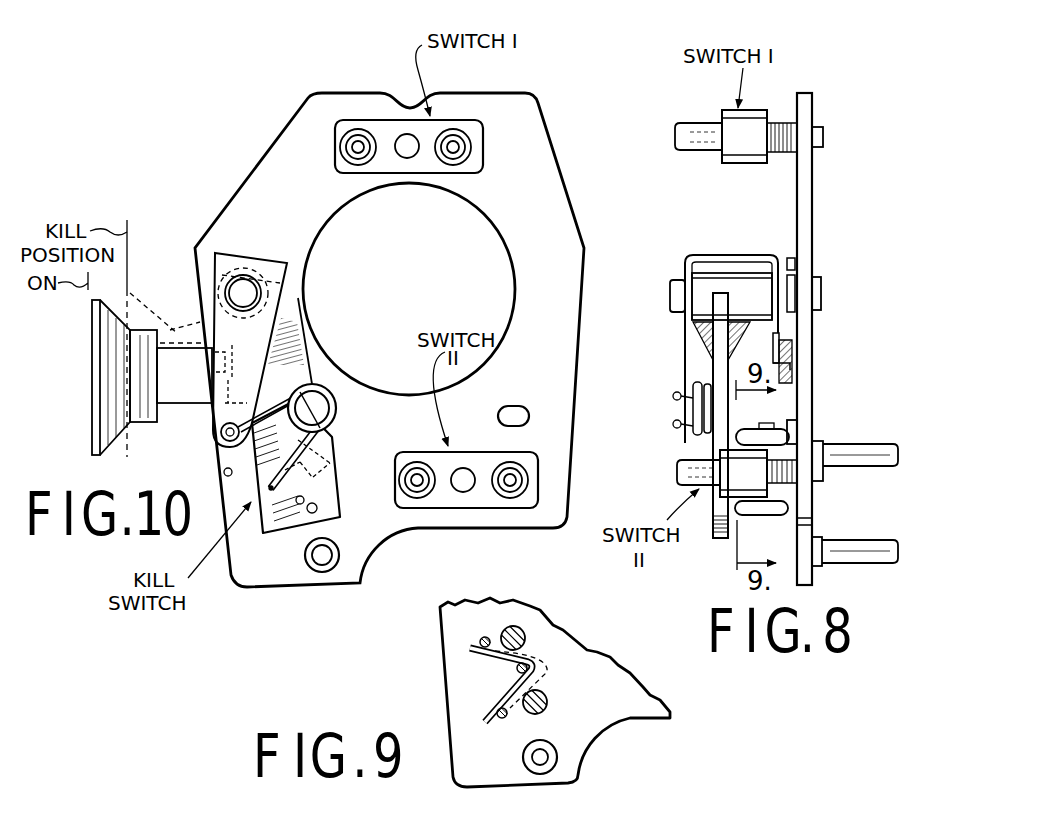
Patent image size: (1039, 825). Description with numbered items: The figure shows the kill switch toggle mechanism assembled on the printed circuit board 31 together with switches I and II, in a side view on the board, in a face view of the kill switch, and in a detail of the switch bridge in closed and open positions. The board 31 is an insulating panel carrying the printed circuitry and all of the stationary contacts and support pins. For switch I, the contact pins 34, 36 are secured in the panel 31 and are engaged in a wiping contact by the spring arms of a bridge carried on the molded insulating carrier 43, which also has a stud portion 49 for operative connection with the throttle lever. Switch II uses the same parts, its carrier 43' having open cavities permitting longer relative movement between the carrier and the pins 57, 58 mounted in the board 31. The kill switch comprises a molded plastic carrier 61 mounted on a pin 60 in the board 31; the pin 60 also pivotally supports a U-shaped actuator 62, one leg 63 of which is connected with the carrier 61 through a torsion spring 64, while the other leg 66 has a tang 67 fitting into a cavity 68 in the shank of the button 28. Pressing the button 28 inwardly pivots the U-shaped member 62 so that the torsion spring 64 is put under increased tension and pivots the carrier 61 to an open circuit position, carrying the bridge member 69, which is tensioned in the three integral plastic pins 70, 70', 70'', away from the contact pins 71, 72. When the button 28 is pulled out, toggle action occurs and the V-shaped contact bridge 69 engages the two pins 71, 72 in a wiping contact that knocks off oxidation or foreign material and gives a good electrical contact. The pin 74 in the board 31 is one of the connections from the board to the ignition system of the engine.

In FIG. 10, the printed circuit board 31 is at (260, 148).
In FIG. 8, the printed circuit board 31 is at (823, 179).
In FIG. 10, the contact pin 34 is at (455, 143).
In FIG. 10, the contact pin 36 is at (356, 140).
In FIG. 10, the carrier 43 is at (472, 132).
In FIG. 8, the carrier 43 is at (760, 160).
In FIG. 10, the stud portion 49 is at (407, 150).
In FIG. 8, the stud portion 49 is at (705, 130).
In FIG. 10, the carrier 43' is at (466, 518).
In FIG. 8, the carrier 43' is at (737, 519).
In FIG. 10, the contact pin 57 is at (518, 494).
In FIG. 10, the contact pin 58 is at (417, 492).
In FIG. 10, the button 28 is at (91, 378).
In FIG. 8, the button 28 is at (787, 377).
In FIG. 10, the pin 60 is at (243, 293).
In FIG. 8, the pin 60 is at (670, 297).
In FIG. 10, the U-shaped actuator 62 is at (240, 249).
In FIG. 8, the U-shaped actuator 62 is at (686, 254).
In FIG. 10, the leg 63 is at (222, 430).
In FIG. 8, the leg 63 is at (690, 328).
In FIG. 10, the torsion spring 64 is at (316, 381).
In FIG. 8, the torsion spring 64 is at (692, 407).
In FIG. 10, the carrier 61 is at (305, 368).
In FIG. 8, the carrier 61 is at (709, 367).
In FIG. 10, the leg 66 is at (303, 306).
In FIG. 8, the leg 66 is at (821, 288).
In FIG. 10, the tang 67 is at (199, 388).
In FIG. 8, the tang 67 is at (780, 330).
In FIG. 10, the cavity 68 is at (188, 330).
In FIG. 10, the contact bridge 69 is at (347, 500).
In FIG. 9, the contact bridge 69 is at (494, 658).
In FIG. 8, the contact bridge 69 is at (773, 426).
In FIG. 10, the insulating pin 70 is at (326, 456).
In FIG. 9, the insulating pin 70 is at (465, 693).
In FIG. 10, the insulating pin 70' is at (203, 465).
In FIG. 9, the insulating pin 70' is at (439, 631).
In FIG. 10, the insulating pin 70'' is at (257, 562).
In FIG. 9, the insulating pin 70'' is at (458, 752).
In FIG. 10, the contact pin 71 is at (348, 389).
In FIG. 9, the contact pin 71 is at (518, 628).
In FIG. 8, the contact pin 71 is at (800, 432).
In FIG. 10, the contact pin 72 is at (310, 513).
In FIG. 9, the contact pin 72 is at (543, 710).
In FIG. 8, the contact pin 72 is at (776, 504).
In FIG. 10, the pin 74 is at (322, 572).
In FIG. 8, the pin 74 is at (873, 553).